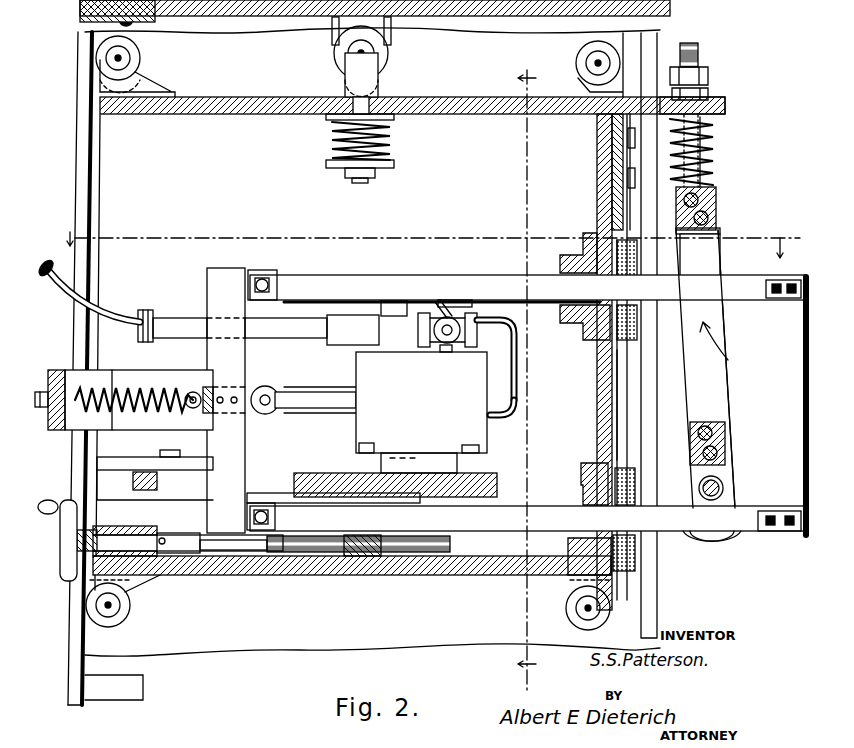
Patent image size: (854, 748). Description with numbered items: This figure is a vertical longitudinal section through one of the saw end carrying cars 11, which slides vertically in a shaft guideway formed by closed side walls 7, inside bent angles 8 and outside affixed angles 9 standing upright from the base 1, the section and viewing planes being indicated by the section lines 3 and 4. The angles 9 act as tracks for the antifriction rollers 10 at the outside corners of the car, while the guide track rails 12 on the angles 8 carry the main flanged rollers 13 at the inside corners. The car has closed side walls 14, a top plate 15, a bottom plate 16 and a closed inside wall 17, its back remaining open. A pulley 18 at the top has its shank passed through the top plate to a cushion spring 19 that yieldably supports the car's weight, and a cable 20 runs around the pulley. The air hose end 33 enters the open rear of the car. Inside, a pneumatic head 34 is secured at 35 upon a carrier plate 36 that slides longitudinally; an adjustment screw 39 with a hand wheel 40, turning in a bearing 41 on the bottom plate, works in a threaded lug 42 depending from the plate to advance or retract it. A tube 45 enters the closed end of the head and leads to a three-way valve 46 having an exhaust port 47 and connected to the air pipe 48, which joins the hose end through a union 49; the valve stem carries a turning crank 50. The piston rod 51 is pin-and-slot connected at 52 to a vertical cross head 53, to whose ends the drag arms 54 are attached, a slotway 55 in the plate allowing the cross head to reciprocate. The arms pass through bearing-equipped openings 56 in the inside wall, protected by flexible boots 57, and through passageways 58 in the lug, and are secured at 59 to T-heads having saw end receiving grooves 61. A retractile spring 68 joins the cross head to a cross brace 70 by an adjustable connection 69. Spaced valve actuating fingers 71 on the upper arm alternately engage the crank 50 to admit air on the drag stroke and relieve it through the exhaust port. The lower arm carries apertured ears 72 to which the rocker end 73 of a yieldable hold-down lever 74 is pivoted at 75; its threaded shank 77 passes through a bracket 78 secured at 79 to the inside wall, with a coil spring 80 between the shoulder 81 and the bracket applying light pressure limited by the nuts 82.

The base 1 is at (220, 660).
The section line 3- 3 is at (64, 238).
The section line 4- 4 is at (536, 70).
The closed side walls 7 is at (426, 32).
The inside bent angles 8 is at (658, 48).
The outside affixed angles 9 is at (80, 147).
The antifriction rollers 10 is at (144, 52).
The car 11 is at (258, 30).
The guide track rails 12 is at (600, 128).
The main flanged rollers 13 is at (576, 66).
The closed side walls 14 is at (106, 178).
The top plate 15 is at (478, 96).
The bottom plate 16 is at (448, 576).
The closed front or inside wall 17 is at (600, 412).
The pulley 18 is at (340, 58).
The cushion spring 19 is at (328, 142).
The cable 20 is at (390, 46).
The air hose end 33 is at (66, 300).
The pneumatic head 34 is at (358, 434).
The securing means 35 is at (455, 446).
The carrier plate 36 is at (200, 440).
The adjustment screw 39 is at (270, 556).
The hand wheel 40 is at (64, 582).
The bearing 41 is at (140, 522).
The lug 42 is at (348, 556).
The air injecting and relieving tube 45 is at (518, 372).
The three-way valve 46 is at (446, 352).
The exhaust port 47 is at (497, 314).
The air pipe 48 is at (163, 340).
The union 49 is at (150, 322).
The turning crank 50 is at (450, 300).
The piston rod 51 is at (340, 404).
The pin and slot connection 52 is at (270, 396).
The vertical cross head 53 is at (206, 276).
The drag arms 54 is at (336, 276).
The slotway 55 is at (190, 532).
The bearing-equipped openings 56 is at (580, 258).
The flexible boots 57 is at (700, 255).
The passageways 58 is at (382, 556).
The securing means 59 is at (790, 534).
The saw end receiving grooves 61 is at (206, 386).
The retractile spring 68 is at (132, 362).
The adjustable connection 69 is at (62, 432).
The cross brace 70 is at (54, 370).
The valve actuating fingers 71 is at (470, 300).
The apertured ears 72 is at (728, 484).
The rocker end 73 is at (727, 446).
The yieldable hold-down lever 74 is at (718, 206).
The pivot 75 is at (698, 486).
The threaded shank 77 is at (714, 160).
The bracket 78 is at (726, 108).
The bracket securing means 79 is at (614, 166).
The coil spring 80 is at (714, 138).
The shoulder 81 is at (676, 232).
The limiting nuts 82 is at (710, 78).